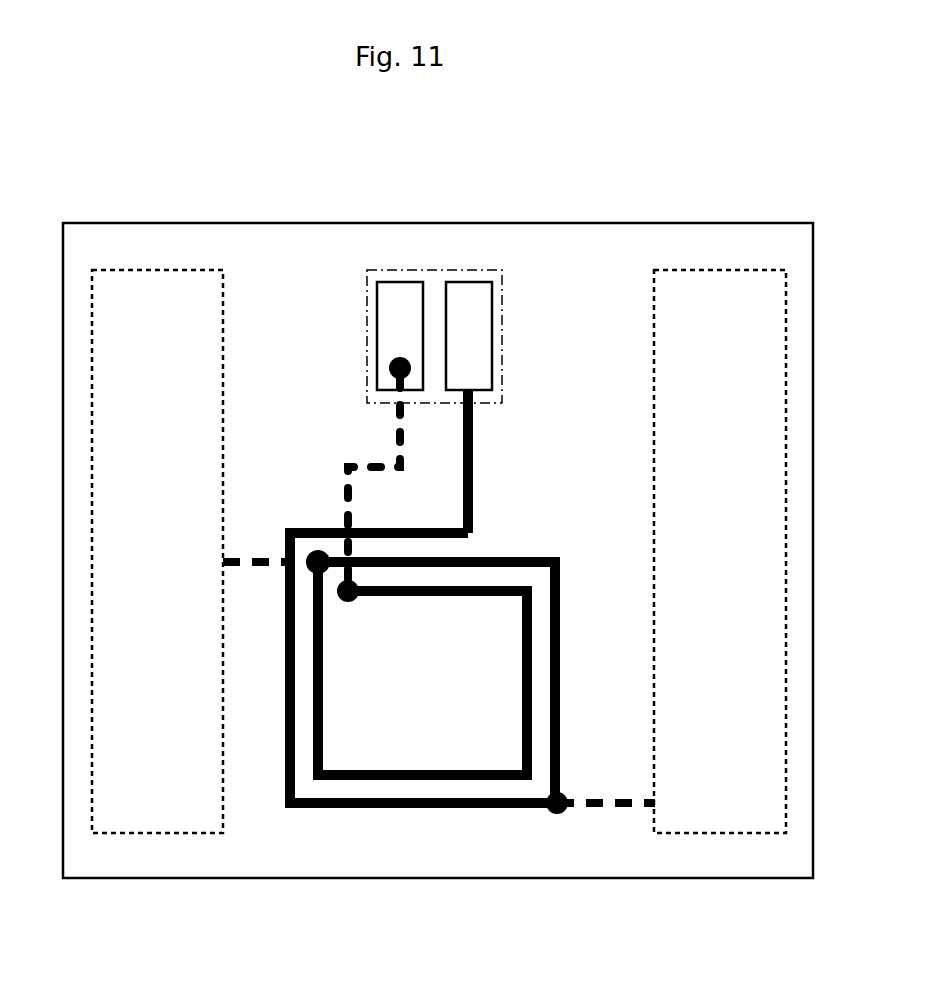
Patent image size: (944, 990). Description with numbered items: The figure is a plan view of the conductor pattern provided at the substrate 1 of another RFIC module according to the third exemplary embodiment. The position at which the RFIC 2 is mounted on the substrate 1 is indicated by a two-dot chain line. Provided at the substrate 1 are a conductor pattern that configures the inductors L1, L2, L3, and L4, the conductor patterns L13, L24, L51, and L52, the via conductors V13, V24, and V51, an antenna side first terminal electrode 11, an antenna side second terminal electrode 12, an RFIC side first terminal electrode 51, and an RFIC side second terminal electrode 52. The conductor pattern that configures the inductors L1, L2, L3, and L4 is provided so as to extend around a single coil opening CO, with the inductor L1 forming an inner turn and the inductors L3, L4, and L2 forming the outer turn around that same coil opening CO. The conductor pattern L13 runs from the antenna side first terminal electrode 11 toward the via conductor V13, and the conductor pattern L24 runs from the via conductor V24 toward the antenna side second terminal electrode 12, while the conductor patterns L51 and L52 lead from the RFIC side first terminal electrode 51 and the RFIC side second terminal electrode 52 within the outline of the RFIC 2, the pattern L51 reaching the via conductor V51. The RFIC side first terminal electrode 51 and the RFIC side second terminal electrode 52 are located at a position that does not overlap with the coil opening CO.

The substrate 1 is at (801, 241).
The RFIC 2 is at (502, 321).
The antenna side first terminal electrode 11 is at (118, 562).
The antenna side second terminal electrode 12 is at (770, 562).
The RFIC side first terminal electrode 51 is at (398, 292).
The RFIC side second terminal electrode 52 is at (473, 292).
The conductor pattern L51 is at (360, 463).
The conductor pattern L52 is at (473, 458).
The inductor L1 is at (325, 681).
The inductor L2 is at (337, 808).
The inductor L3 is at (500, 557).
The inductor L4 is at (560, 637).
The conductor pattern L13 is at (252, 557).
The conductor pattern L24 is at (627, 815).
The via conductor V13 is at (318, 551).
The via conductor V51 is at (352, 600).
The via conductor V24 is at (557, 813).
The coil opening CO is at (437, 724).